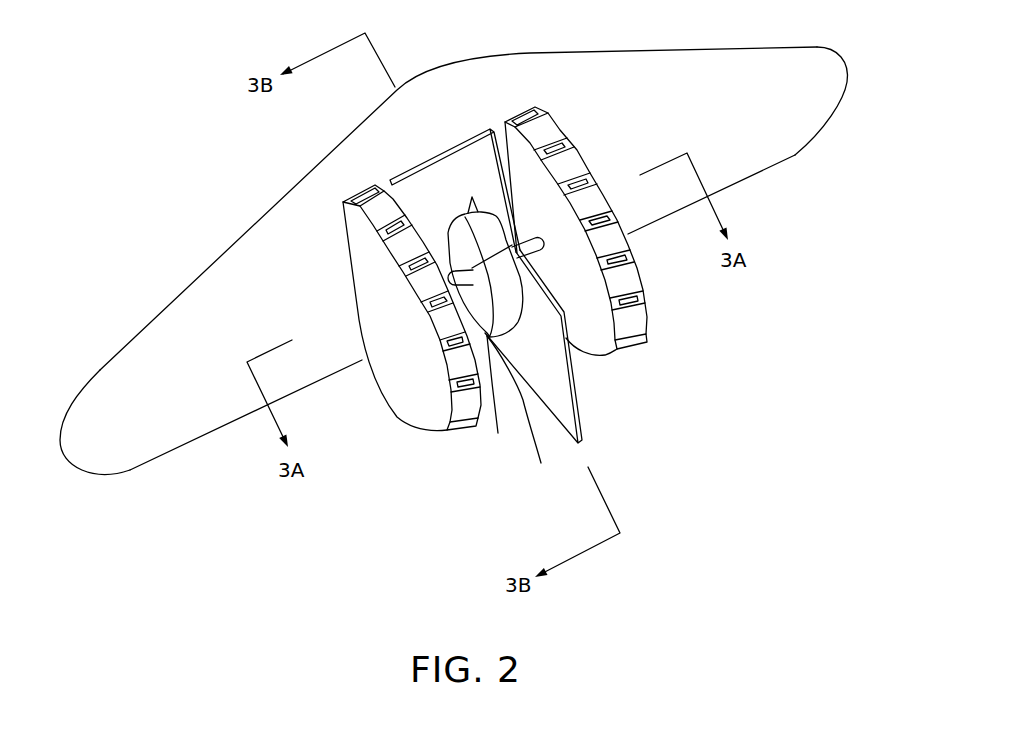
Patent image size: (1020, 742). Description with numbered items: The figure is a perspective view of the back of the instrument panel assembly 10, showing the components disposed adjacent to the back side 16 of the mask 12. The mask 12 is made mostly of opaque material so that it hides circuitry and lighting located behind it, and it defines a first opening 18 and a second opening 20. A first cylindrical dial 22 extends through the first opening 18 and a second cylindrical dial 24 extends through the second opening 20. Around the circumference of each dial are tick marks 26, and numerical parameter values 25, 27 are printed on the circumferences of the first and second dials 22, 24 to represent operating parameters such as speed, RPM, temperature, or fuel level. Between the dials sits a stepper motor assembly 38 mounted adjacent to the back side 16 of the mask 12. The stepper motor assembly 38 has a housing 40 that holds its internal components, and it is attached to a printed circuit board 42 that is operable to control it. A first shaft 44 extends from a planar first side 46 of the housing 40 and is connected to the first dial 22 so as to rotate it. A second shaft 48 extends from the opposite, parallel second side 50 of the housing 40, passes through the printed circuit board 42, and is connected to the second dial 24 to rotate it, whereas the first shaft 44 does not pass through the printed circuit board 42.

The instrument panel assembly 10 is at (170, 245).
The mask 12 is at (790, 157).
The back side 16 is at (130, 447).
The first opening 18 is at (367, 187).
The second opening 20 is at (526, 104).
The first cylindrical dial 22 is at (453, 427).
The second cylindrical dial 24 is at (622, 350).
The parameter values 25 is at (413, 289).
The tick marks 26 is at (425, 319).
The parameter values 27 is at (607, 205).
The stepper motor assembly 38 is at (455, 207).
The housing 40 is at (524, 411).
The printed circuit board 42 is at (565, 405).
The first shaft 44 is at (496, 399).
The first side 46 is at (452, 253).
The second shaft 48 is at (529, 241).
The second side 50 is at (494, 205).